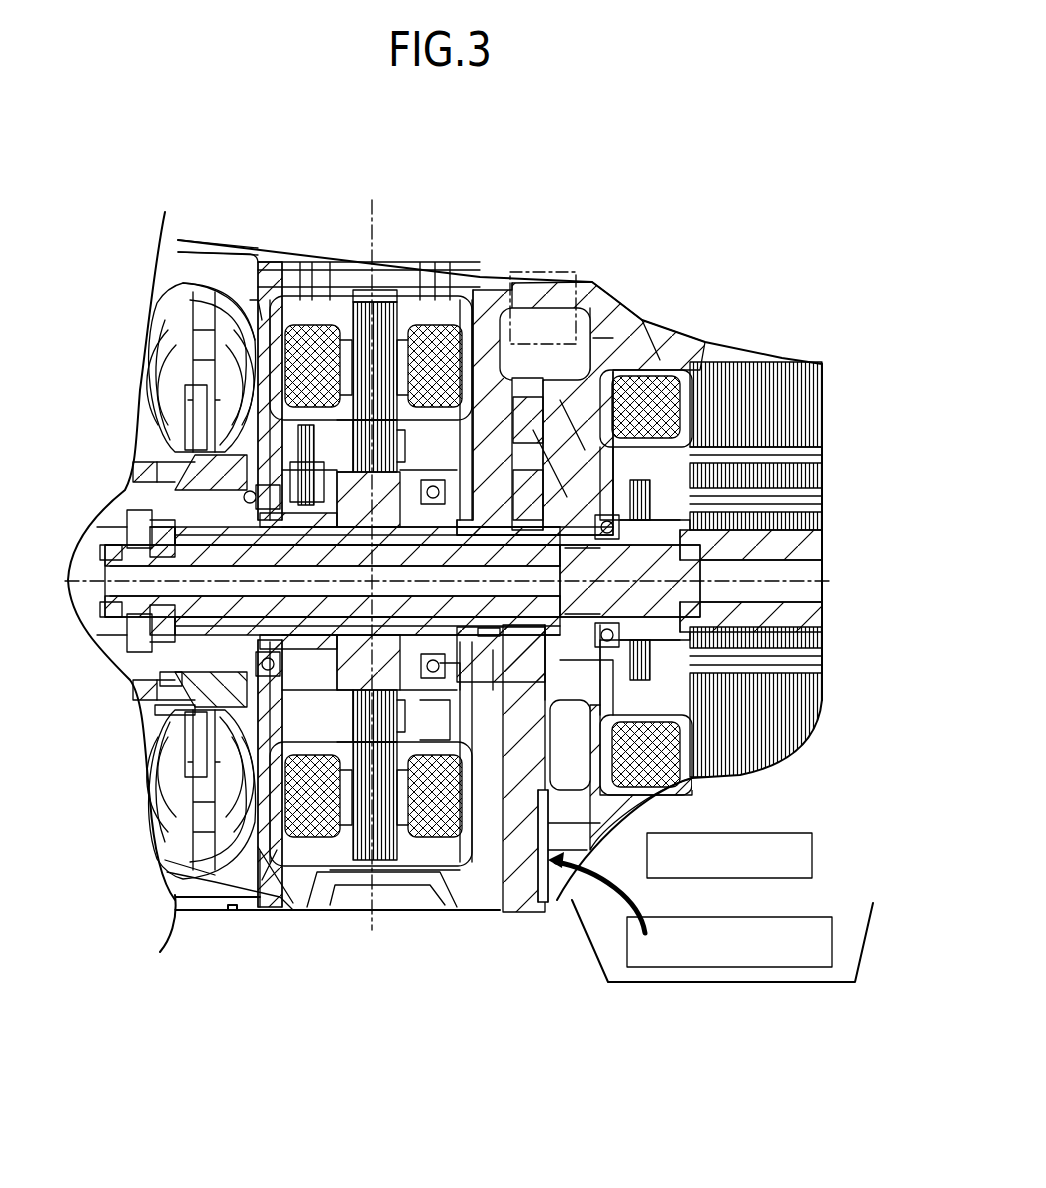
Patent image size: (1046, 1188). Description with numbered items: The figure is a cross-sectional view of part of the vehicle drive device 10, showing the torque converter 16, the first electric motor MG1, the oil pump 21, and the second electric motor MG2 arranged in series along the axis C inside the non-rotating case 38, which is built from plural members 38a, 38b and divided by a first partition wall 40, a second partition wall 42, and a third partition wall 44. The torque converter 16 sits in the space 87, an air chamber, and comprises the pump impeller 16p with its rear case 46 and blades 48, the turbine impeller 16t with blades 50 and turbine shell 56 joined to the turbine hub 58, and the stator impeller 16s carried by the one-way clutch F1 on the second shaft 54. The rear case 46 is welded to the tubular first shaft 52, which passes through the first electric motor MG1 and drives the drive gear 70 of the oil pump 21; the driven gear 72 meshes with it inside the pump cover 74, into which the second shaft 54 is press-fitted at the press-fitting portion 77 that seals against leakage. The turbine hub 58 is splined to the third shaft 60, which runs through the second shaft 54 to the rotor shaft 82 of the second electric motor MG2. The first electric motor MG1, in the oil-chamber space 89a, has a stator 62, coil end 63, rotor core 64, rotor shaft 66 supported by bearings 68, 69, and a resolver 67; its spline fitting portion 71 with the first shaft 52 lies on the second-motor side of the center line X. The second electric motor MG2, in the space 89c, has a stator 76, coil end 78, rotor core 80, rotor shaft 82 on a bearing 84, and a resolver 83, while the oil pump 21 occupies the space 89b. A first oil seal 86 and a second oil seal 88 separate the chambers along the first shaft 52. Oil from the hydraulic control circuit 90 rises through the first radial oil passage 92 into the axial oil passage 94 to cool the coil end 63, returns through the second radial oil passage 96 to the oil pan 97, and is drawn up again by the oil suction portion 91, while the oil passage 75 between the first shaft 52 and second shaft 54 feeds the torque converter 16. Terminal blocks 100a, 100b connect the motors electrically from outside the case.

The vehicle drive device 10 is at (445, 550).
The torque converter 16 is at (185, 345).
The pump impeller 16p is at (205, 284).
The turbine impeller 16t is at (134, 374).
The stator impeller 16s is at (178, 433).
The oil pump 21 is at (549, 414).
The case 38 is at (445, 583).
The case member 38a is at (268, 252).
The case member 38b is at (697, 350).
The first partition wall 40 is at (290, 323).
The second partition wall 42 is at (455, 323).
The third partition wall 44 is at (623, 373).
The rear case 46 is at (183, 283).
The blades 48 is at (222, 322).
The blades 50 is at (155, 788).
The first shaft 52 is at (441, 665).
The second shaft 54 is at (494, 660).
The turbine shell 56 is at (178, 406).
The turbine hub 58 is at (130, 535).
The third shaft 60 is at (105, 560).
The stator 62 is at (362, 300).
The coil end 63 is at (328, 330).
The rotor core 64 is at (387, 455).
The rotor shaft 66 is at (400, 676).
The resolver 67 is at (319, 458).
The bearing 68 is at (158, 712).
The bearing 69 is at (446, 692).
The drive gear 70 is at (558, 480).
The spline fitting portion 71 is at (429, 535).
The driven gear 72 is at (546, 452).
The pump cover 74 is at (558, 514).
The oil passage 75 is at (333, 628).
The stator 76 is at (808, 416).
The press-fitting portion 77 is at (570, 555).
The coil end 78 is at (650, 410).
The rotor core 80 is at (802, 478).
The rotor shaft 82 is at (788, 549).
The resolver 83 is at (646, 498).
The bearing 84 is at (610, 465).
The first oil seal 86 is at (178, 680).
The space 87 is at (200, 879).
The second oil seal 88 is at (492, 638).
The space 89a is at (333, 850).
The space 89b is at (556, 790).
The space 89c is at (658, 694).
The hydraulic control circuit 90 is at (765, 833).
The oil suction portion 91 is at (810, 952).
The first radial oil passage 92 is at (487, 374).
The axial oil passage 94 is at (394, 294).
The second radial oil passage 96 is at (270, 290).
The oil pan 97 is at (592, 953).
The terminal block 100a is at (549, 284).
The terminal block 100b is at (545, 252).
The one-way clutch F1 is at (130, 667).
The first electric motor MG1 is at (402, 531).
The second electric motor MG2 is at (748, 368).
The center line X is at (388, 551).
The axis C is at (816, 581).